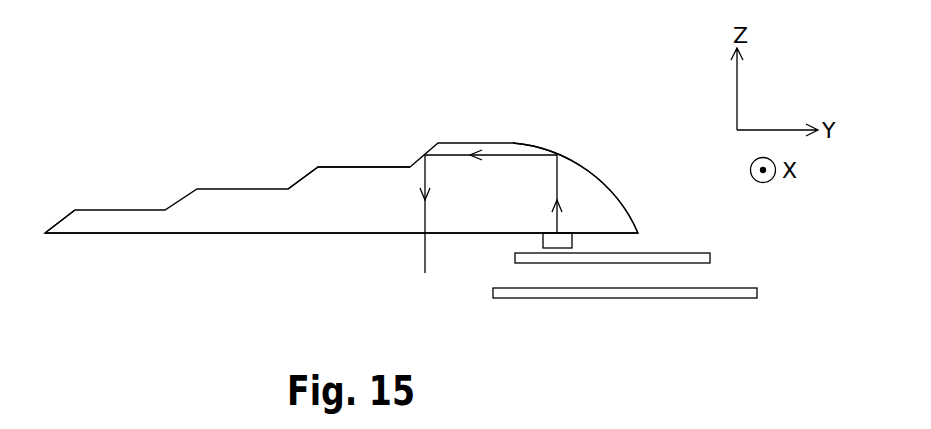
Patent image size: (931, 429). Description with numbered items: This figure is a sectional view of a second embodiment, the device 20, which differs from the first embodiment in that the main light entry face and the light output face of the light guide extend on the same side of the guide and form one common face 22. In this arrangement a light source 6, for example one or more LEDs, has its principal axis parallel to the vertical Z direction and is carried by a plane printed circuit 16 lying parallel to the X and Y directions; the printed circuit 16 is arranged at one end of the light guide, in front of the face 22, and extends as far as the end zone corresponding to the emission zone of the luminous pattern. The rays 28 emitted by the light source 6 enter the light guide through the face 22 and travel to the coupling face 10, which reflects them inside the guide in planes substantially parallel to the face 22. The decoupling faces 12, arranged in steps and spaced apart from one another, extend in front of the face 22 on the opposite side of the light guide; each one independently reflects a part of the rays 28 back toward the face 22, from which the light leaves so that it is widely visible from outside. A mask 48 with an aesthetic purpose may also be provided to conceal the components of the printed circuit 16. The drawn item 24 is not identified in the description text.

The light source 6 is at (543, 243).
The coupling face 10 is at (608, 188).
The decoupling faces 12 is at (302, 175).
The printed circuit 16 is at (690, 253).
The device 20 is at (582, 144).
The face 22 is at (79, 233).
The underside 24 is at (242, 233).
The rays 28 is at (425, 253).
The mask 48 is at (528, 300).